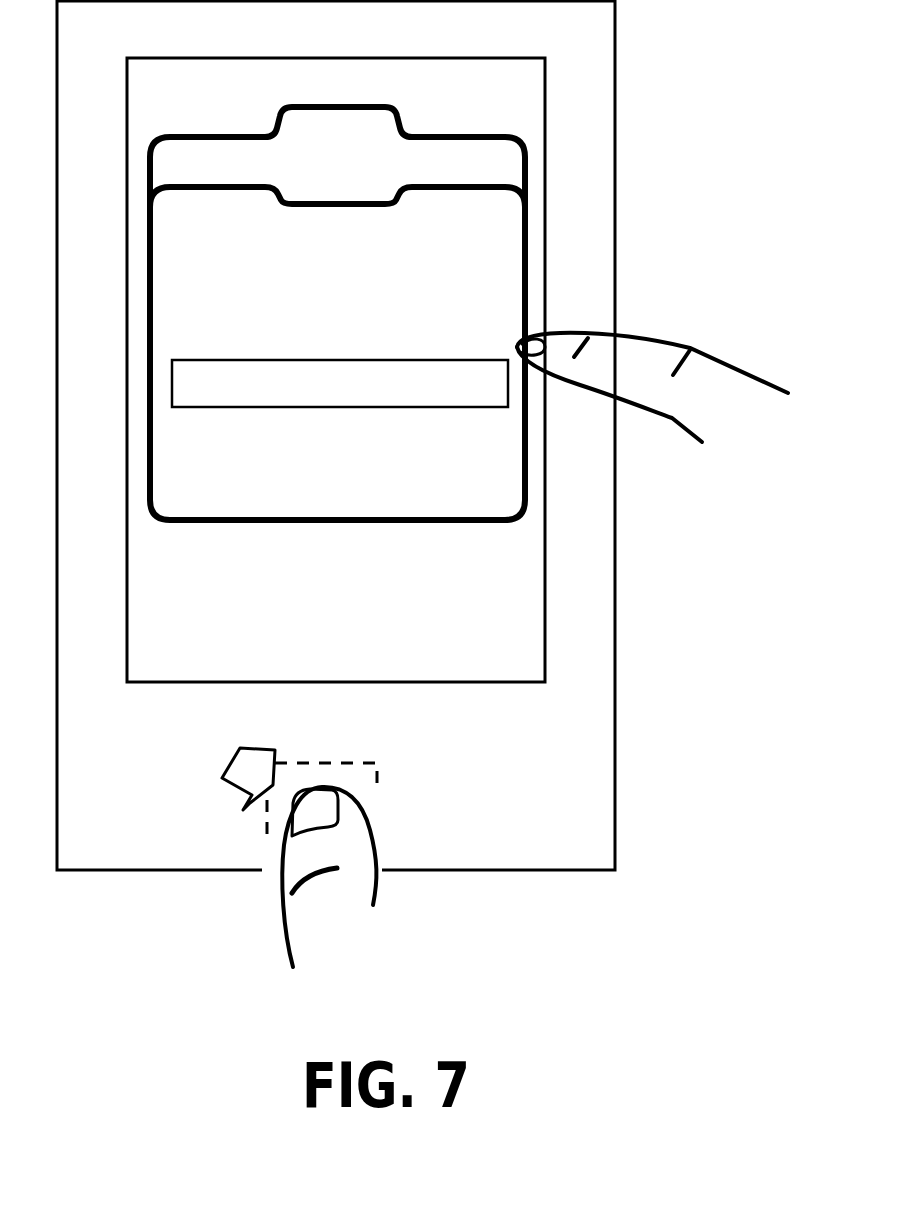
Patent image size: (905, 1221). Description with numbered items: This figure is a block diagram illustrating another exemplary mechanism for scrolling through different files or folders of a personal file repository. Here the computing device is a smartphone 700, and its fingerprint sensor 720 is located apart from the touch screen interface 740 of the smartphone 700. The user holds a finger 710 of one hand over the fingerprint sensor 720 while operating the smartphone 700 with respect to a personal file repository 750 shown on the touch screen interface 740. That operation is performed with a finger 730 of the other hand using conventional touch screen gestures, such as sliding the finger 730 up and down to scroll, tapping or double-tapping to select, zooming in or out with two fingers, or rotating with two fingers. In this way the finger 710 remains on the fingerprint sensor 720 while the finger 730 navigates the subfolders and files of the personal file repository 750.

The smartphone 700 is at (540, 857).
The finger 710 is at (363, 838).
The fingerprint sensor 720 is at (358, 778).
The finger 730 is at (662, 343).
The touch screen interface 740 is at (498, 672).
The personal file repository 750 is at (213, 510).